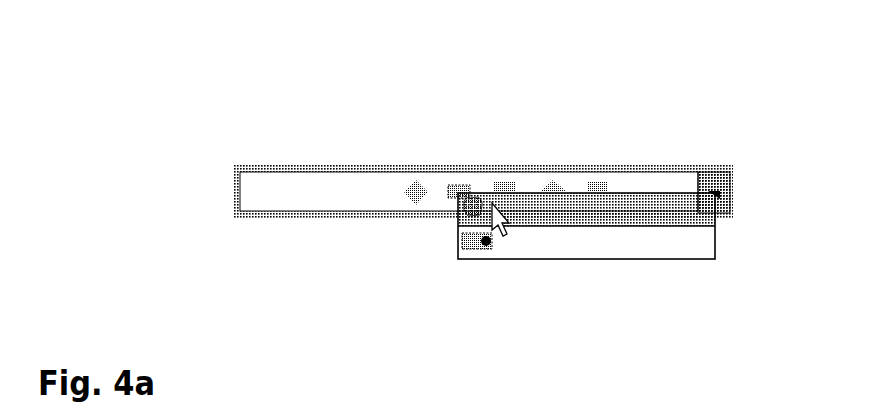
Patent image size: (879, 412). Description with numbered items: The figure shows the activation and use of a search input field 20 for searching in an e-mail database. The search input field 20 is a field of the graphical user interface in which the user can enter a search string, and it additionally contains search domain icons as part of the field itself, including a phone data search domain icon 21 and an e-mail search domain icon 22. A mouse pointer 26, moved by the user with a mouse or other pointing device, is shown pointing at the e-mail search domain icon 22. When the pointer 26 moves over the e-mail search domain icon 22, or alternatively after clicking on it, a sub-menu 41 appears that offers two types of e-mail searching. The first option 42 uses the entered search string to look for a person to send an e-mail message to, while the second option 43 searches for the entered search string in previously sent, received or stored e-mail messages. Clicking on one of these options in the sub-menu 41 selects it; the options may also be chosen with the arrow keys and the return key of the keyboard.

The search input field 20 is at (300, 178).
The phone data search domain icon 21 is at (420, 203).
The e-mail search domain icon 22 is at (455, 185).
The mouse pointer 26 is at (503, 225).
The sub-menu 41 is at (652, 260).
The first option 42 is at (478, 207).
The second option 43 is at (478, 250).